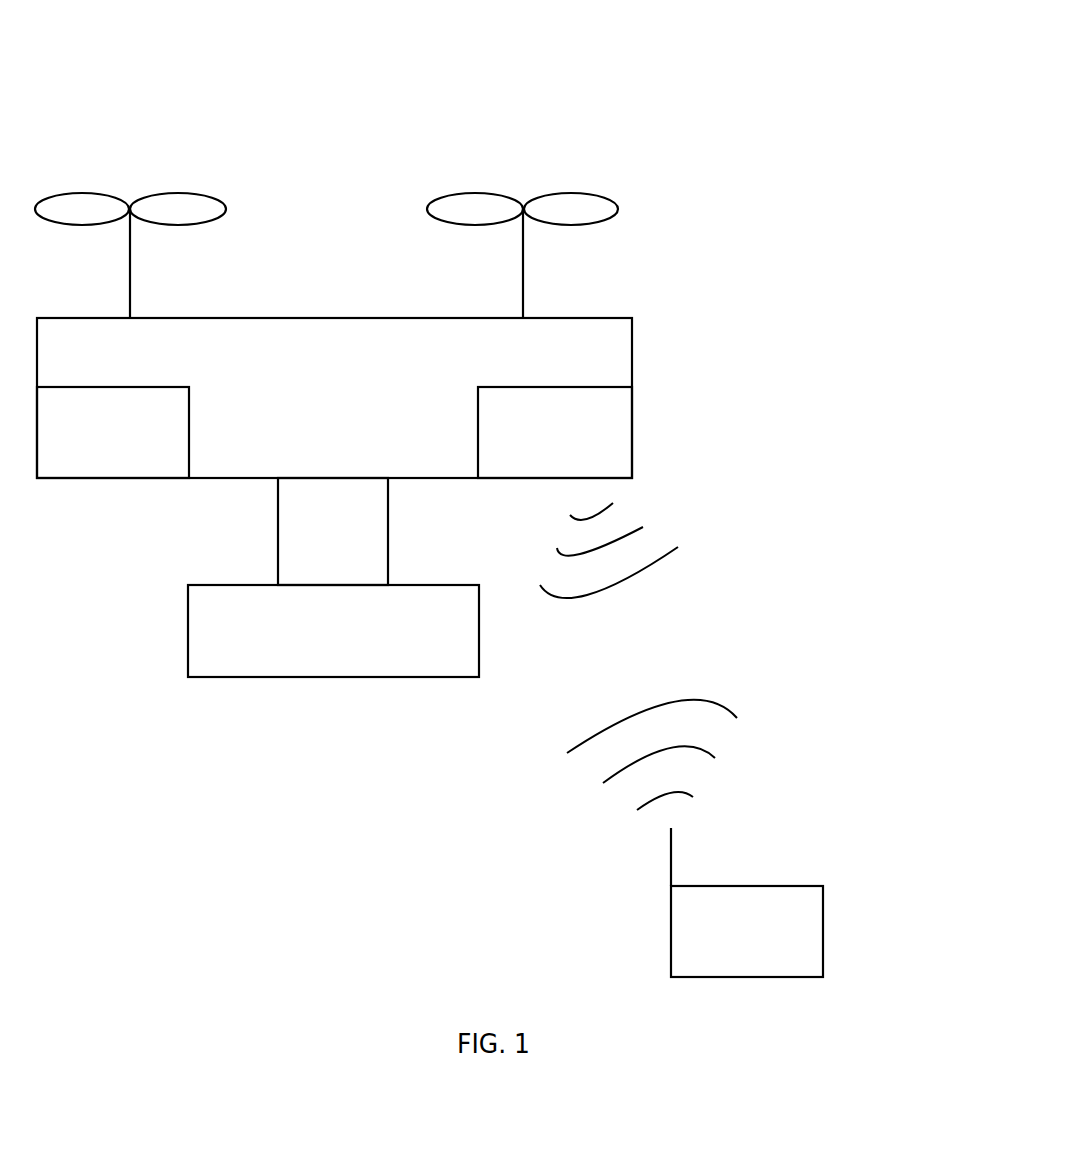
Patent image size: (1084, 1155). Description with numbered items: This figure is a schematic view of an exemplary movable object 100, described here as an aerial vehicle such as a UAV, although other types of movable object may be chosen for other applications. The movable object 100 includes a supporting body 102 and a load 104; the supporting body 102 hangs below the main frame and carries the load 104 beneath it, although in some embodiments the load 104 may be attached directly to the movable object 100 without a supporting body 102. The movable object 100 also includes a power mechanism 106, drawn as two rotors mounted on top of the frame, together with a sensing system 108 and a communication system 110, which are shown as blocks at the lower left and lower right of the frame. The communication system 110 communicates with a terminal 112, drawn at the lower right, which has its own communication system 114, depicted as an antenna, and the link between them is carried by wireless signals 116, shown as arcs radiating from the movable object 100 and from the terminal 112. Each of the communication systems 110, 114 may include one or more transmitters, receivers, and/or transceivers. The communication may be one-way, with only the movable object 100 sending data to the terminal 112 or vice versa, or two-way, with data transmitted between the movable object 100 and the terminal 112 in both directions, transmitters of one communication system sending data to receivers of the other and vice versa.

The movable object 100 is at (695, 57).
The supporting body 102 is at (333, 531).
The load 104 is at (333, 631).
The power mechanism 106 is at (182, 165).
The sensing system 108 is at (113, 432).
The communication system 110 is at (555, 432).
The terminal 112 is at (747, 931).
The communication system 114 is at (652, 860).
The wireless signals 116 is at (703, 513).